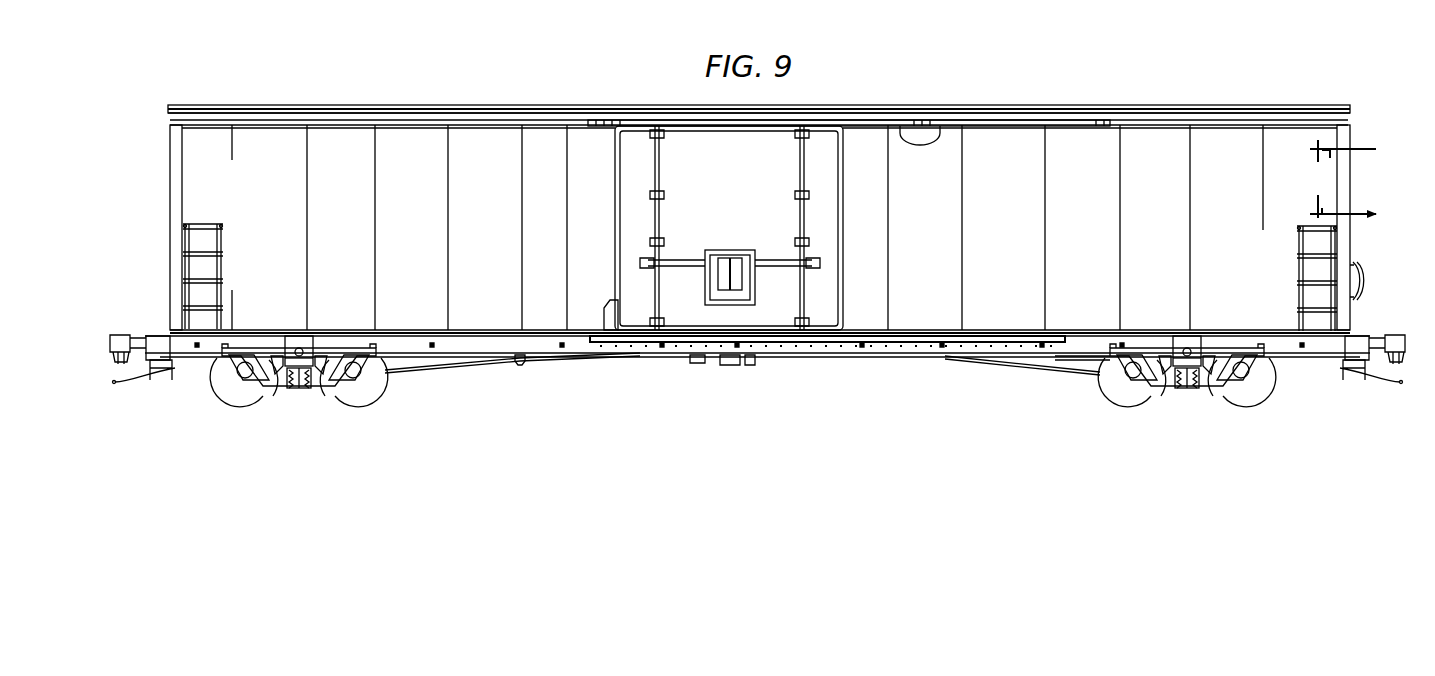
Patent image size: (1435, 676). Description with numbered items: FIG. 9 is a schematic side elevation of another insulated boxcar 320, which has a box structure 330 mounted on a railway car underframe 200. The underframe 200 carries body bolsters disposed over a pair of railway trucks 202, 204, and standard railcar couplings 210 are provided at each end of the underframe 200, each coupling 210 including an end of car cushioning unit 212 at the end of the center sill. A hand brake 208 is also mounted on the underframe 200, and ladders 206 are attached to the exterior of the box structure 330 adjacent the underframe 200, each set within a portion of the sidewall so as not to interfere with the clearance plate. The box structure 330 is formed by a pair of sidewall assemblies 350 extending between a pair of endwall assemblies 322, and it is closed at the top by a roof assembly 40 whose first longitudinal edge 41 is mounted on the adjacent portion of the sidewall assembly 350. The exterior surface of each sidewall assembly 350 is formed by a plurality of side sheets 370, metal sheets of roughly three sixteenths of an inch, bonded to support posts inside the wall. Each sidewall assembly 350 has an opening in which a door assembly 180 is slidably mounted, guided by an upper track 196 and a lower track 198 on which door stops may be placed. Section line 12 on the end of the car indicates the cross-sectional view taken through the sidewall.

The section line 12- 12 is at (1327, 182).
The roof assembly 40 is at (468, 104).
The first longitudinal edge 41 is at (902, 127).
The door assembly 180 is at (747, 195).
The upper track 196 is at (938, 126).
The lower track 198 is at (862, 350).
The railway car underframe 200 is at (556, 376).
The railway truck 202 is at (292, 394).
The railway truck 204 is at (1212, 394).
The ladder 206 is at (205, 242).
The hand brake 208 is at (1368, 276).
The railcar coupling 210 is at (120, 335).
The end of car cushioning unit 212 is at (162, 370).
The insulated boxcar 320 is at (247, 80).
The endwall assembly 322 is at (170, 168).
The box structure 330 is at (1156, 180).
The sidewall assembly 350 is at (942, 241).
The side sheet 370 is at (346, 140).